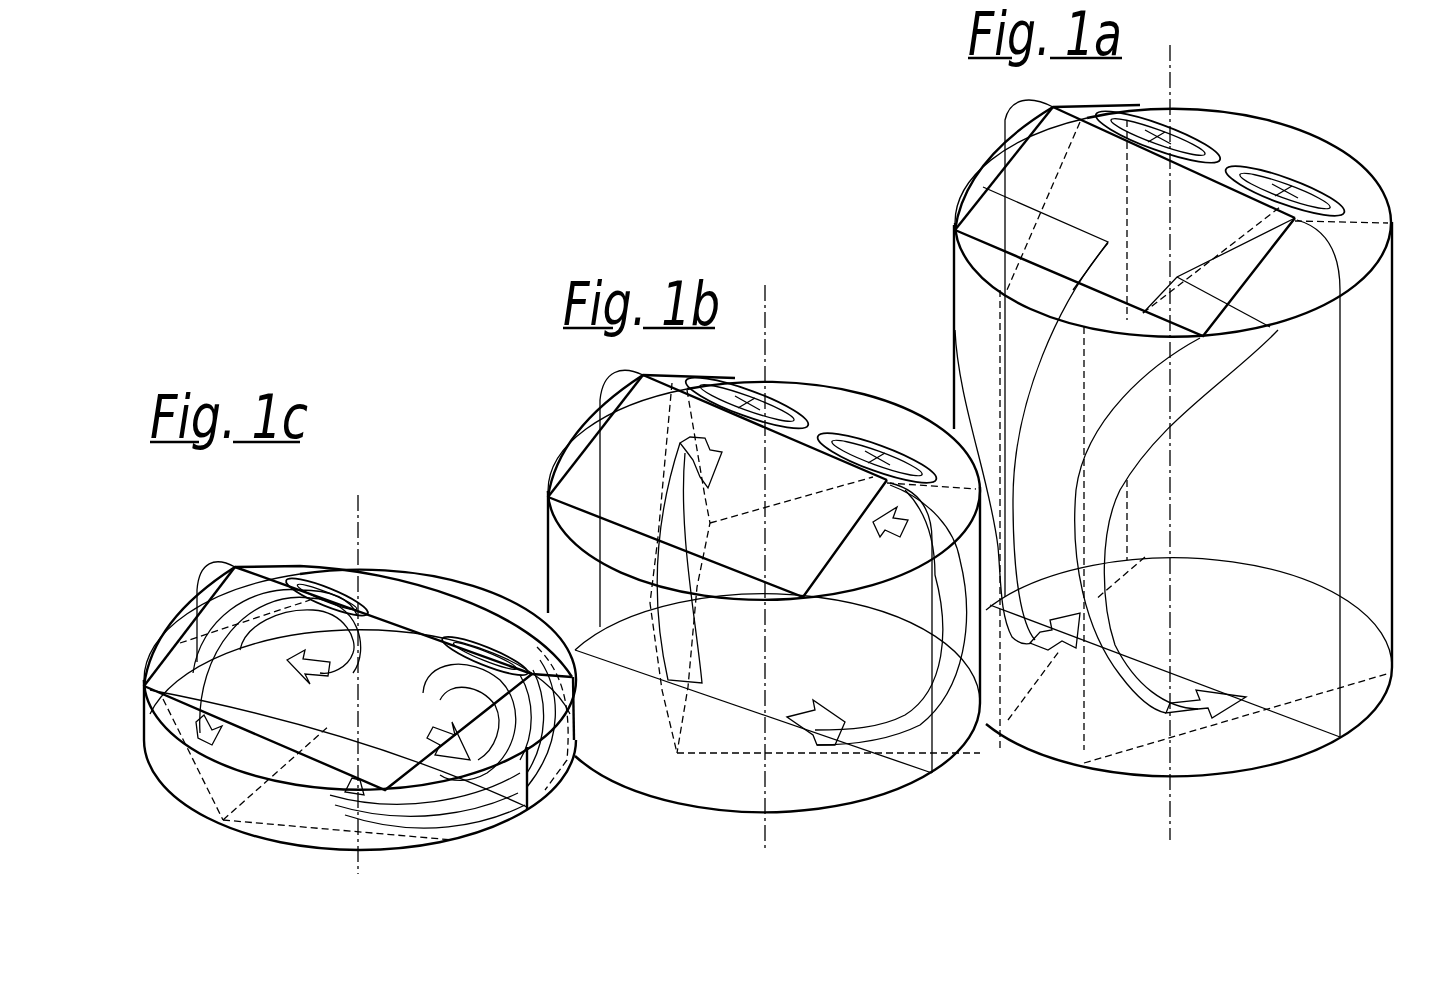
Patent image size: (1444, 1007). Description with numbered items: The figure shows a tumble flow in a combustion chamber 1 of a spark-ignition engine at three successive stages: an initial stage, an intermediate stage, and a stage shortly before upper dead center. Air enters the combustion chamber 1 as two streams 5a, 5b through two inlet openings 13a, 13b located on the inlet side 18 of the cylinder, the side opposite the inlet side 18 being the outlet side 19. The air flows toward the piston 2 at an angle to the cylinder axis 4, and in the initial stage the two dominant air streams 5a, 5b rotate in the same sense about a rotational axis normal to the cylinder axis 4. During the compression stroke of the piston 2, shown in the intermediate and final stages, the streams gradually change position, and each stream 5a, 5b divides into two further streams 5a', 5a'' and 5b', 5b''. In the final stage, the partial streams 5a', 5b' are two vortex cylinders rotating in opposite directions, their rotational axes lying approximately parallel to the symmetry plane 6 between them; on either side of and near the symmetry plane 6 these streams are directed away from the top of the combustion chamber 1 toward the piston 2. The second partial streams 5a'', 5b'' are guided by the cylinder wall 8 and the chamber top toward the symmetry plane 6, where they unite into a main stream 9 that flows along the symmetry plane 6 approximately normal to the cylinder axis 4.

In FIG. 1A, the combustion chamber 1 is at (1238, 513).
In FIG. 1B, the combustion chamber 1 is at (811, 676).
In FIG. 1C, the combustion chamber 1 is at (158, 737).
In FIG. 1A, the piston 2 is at (1303, 757).
In FIG. 1B, the piston 2 is at (897, 793).
In FIG. 1C, the piston 2 is at (439, 844).
In FIG. 1A, the cylinder axis 4 is at (1172, 621).
In FIG. 1B, the cylinder axis 4 is at (767, 323).
In FIG. 1C, the cylinder axis 4 is at (360, 532).
In FIG. 1A, the air stream 5a is at (997, 444).
In FIG. 1B, the air stream 5a is at (662, 559).
In FIG. 1C, the air stream 5a is at (241, 704).
In FIG. 1A, the air stream 5b is at (1185, 524).
In FIG. 1B, the air stream 5b is at (877, 615).
In FIG. 1C, the air stream 5b is at (397, 824).
In FIG. 1C, the vortex cylinder 5a' is at (297, 664).
In FIG. 1C, the second partial stream 5a'' is at (288, 657).
In FIG. 1C, the vortex cylinder 5b' is at (445, 722).
In FIG. 1C, the second partial stream 5b'' is at (564, 743).
In FIG. 1C, the symmetry plane 6 is at (470, 621).
In FIG. 1A, the cylinder wall 8 is at (1394, 437).
In FIG. 1C, the cylinder wall 8 is at (580, 724).
In FIG. 1C, the main stream 9 is at (338, 748).
In FIG. 1A, the inlet opening 13a is at (1200, 143).
In FIG. 1A, the inlet opening 13b is at (1320, 200).
In FIG. 1C, the inlet side 18 is at (277, 580).
In FIG. 1C, the outlet side 19 is at (239, 598).